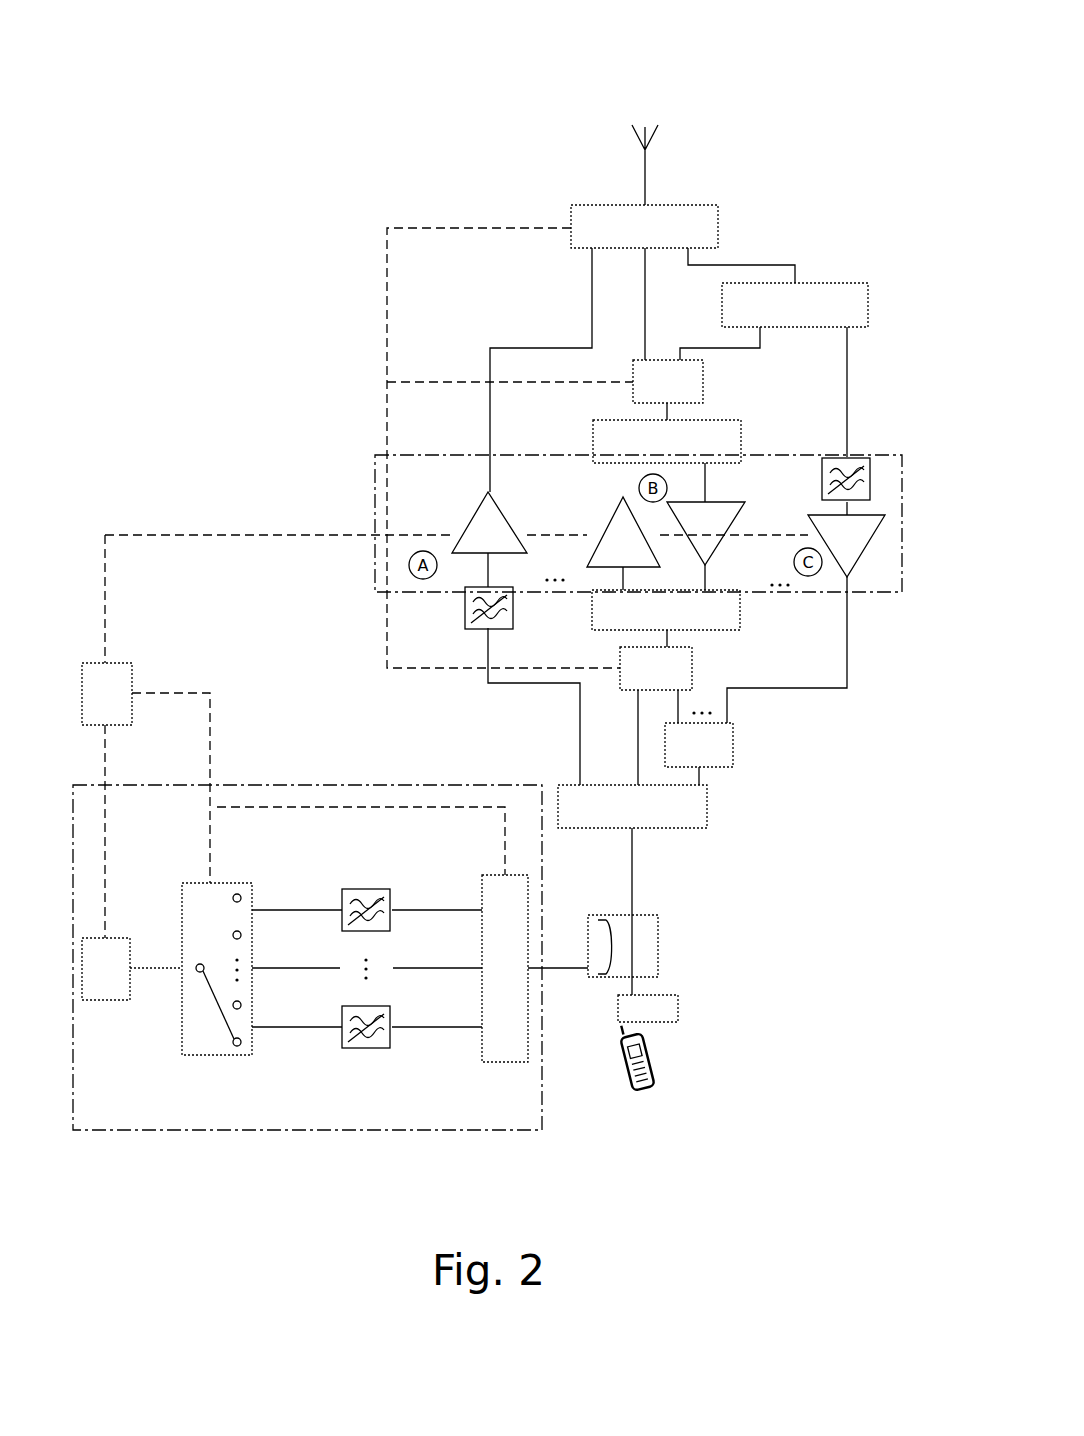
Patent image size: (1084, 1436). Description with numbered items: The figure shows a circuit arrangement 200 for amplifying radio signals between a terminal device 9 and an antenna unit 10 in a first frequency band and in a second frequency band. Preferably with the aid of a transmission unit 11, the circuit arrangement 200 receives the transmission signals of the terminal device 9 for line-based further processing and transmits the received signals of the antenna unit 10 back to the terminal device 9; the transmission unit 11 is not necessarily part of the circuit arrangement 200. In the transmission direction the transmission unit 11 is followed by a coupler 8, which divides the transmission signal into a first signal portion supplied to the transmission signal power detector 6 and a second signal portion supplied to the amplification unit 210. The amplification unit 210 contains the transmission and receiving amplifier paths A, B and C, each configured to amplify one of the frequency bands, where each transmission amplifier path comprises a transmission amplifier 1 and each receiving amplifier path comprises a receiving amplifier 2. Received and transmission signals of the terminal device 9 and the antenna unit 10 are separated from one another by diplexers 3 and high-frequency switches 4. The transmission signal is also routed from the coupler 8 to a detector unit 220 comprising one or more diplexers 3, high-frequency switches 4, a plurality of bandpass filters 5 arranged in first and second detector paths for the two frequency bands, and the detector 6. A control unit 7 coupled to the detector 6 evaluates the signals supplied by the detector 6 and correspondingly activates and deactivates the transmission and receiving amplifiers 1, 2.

The transmission amplifier 1 is at (556, 529).
The receiving amplifier 2 is at (776, 539).
The diplexer 3 is at (675, 672).
The high-frequency switch 4 is at (450, 630).
The bandpass filter 5 is at (585, 768).
The detector 6 is at (106, 969).
The control unit 7 is at (107, 694).
The coupler 8 is at (615, 967).
The terminal device 9 is at (613, 1057).
The antenna unit 10 is at (660, 165).
The transmission unit 11 is at (648, 1008).
The circuit arrangement 200 is at (727, 100).
The amplification unit 210 is at (880, 452).
The detector unit 220 is at (482, 1133).